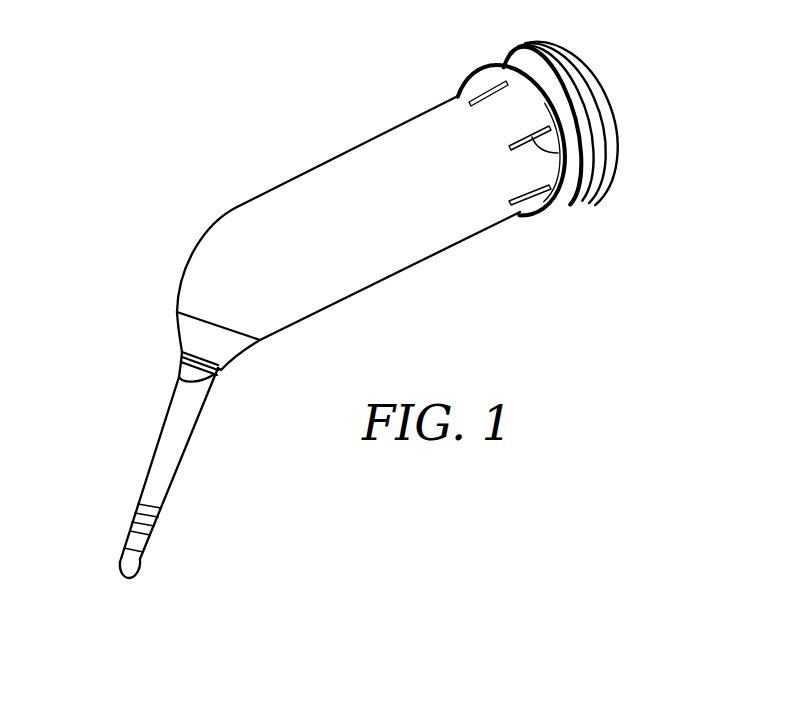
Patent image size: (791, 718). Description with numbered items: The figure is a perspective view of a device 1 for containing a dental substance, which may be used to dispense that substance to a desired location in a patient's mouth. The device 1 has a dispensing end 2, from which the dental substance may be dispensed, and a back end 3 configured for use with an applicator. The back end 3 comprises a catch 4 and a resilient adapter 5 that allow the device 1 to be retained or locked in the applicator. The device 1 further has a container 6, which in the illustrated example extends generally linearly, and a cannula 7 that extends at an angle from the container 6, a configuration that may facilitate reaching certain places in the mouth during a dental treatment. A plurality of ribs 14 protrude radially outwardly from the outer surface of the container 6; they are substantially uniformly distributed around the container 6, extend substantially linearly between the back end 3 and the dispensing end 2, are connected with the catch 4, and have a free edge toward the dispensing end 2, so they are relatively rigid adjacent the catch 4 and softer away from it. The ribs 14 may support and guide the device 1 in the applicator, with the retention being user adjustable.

The device 1 is at (232, 126).
The dispensing end 2 is at (86, 516).
The back end 3 is at (604, 226).
The catch 4 is at (492, 64).
The resilient adapter 5 is at (598, 73).
The container 6 is at (332, 158).
The cannula 7 is at (180, 462).
The ribs 14 is at (558, 153).